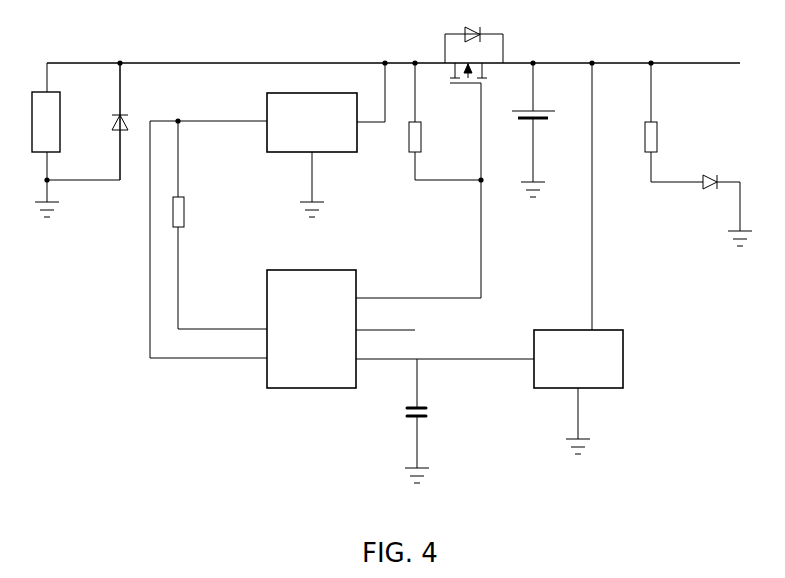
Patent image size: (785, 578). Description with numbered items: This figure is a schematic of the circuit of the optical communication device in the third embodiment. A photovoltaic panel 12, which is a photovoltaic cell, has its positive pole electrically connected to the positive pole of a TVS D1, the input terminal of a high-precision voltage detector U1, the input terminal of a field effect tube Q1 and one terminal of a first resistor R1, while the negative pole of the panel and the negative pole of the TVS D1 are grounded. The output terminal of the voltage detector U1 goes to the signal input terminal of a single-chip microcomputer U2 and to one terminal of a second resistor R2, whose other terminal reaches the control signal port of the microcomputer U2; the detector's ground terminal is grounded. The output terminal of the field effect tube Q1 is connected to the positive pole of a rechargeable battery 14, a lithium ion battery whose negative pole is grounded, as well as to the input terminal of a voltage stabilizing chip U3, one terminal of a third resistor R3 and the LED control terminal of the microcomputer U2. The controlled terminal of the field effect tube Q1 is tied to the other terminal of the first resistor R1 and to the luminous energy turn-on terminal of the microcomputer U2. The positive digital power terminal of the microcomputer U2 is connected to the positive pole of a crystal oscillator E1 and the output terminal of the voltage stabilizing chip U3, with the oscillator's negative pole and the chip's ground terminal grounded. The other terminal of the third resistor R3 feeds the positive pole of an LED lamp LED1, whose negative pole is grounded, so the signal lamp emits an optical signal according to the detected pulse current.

The photovoltaic panel 12 is at (57, 92).
The rechargeable battery 14 is at (540, 98).
The TVS D1 is at (130, 121).
The first resistor R1 is at (446, 121).
The second resistor R2 is at (220, 223).
The third resistor R3 is at (674, 121).
The high-precision voltage detector U1 is at (327, 138).
The single-chip microcomputer U2 is at (400, 318).
The voltage stabilizing chip U3 is at (578, 381).
The field effect tube Q1 is at (474, 162).
The crystal oscillator E1 is at (429, 421).
The LED lamp LED1 is at (715, 210).